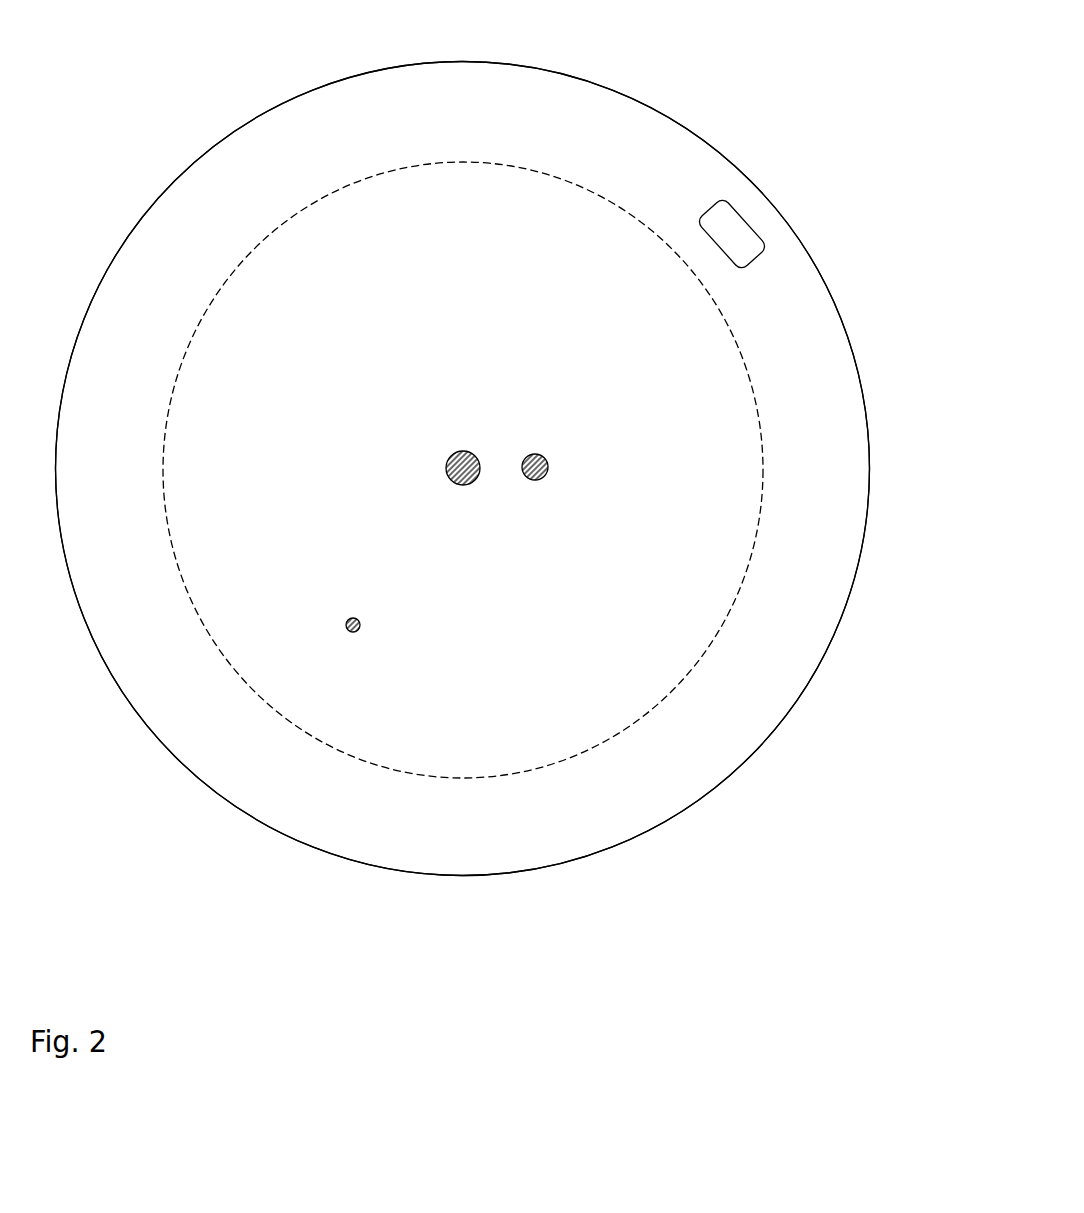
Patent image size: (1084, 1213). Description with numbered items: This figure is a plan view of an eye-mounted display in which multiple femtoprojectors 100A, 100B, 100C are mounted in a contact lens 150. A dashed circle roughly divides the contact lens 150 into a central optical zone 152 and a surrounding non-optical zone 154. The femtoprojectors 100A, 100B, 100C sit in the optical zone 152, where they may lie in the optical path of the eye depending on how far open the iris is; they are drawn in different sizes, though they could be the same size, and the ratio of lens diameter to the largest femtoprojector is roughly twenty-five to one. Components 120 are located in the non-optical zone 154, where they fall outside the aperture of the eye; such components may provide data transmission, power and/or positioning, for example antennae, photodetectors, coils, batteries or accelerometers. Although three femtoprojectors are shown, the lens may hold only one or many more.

The contact lens 150 is at (587, 80).
The non-optical zone 154 is at (512, 138).
The optical zone 152 is at (535, 222).
The components 120 is at (728, 223).
The femtoprojector 100A is at (451, 456).
The femtoprojector 100B is at (544, 454).
The femtoprojector 100C is at (358, 620).